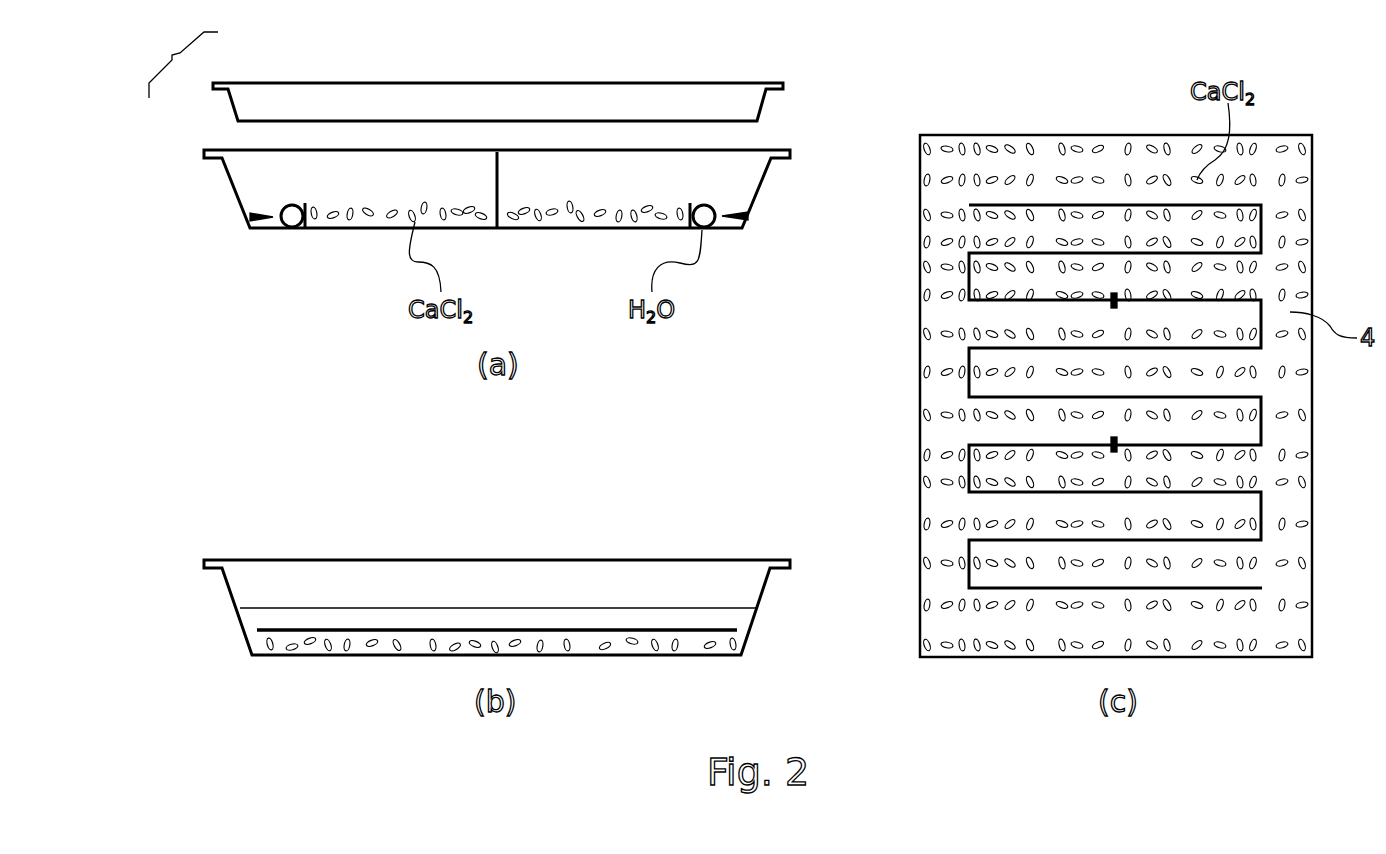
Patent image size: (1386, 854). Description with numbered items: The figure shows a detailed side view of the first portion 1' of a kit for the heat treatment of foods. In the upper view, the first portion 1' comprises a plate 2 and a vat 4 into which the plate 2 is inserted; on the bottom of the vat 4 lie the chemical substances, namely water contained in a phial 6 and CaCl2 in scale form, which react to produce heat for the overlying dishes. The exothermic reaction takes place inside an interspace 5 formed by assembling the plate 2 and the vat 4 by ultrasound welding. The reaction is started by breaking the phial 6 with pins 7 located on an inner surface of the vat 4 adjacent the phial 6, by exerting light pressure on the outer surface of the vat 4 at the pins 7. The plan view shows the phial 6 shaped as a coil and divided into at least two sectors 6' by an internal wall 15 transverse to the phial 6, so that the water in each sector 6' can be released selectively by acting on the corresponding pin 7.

The first portion 1' is at (183, 63).
The plate 2 is at (277, 100).
The vat 4 is at (232, 183).
The interspace 5 is at (327, 618).
The phial 6 is at (524, 262).
The sector 6' is at (1174, 332).
The pin 7 is at (250, 218).
The internal wall 15 is at (1114, 302).